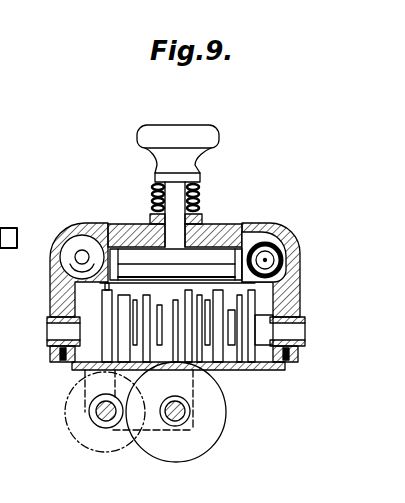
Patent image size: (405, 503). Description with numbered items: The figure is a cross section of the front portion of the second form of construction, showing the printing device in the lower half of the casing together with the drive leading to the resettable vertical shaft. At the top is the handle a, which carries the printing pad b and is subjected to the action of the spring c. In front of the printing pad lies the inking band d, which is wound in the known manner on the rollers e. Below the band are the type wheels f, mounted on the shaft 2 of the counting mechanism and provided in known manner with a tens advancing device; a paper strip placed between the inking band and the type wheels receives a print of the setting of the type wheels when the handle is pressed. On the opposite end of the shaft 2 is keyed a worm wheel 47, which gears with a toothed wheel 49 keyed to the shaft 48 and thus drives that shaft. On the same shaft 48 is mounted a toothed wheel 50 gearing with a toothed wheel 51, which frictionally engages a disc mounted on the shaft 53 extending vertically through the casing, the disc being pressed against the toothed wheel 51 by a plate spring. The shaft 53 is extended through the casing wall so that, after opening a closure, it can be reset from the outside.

The handle a is at (205, 142).
The printing pad b is at (180, 277).
The spring c is at (152, 187).
The inking band d is at (105, 268).
The rollers e is at (73, 247).
The type wheels f is at (248, 307).
The worm wheel 47 is at (166, 295).
The shaft 2 is at (52, 334).
The shaft 48 is at (100, 414).
The toothed wheel 49 is at (70, 395).
The toothed wheel 50 is at (100, 426).
The toothed wheel 51 is at (225, 399).
The shaft 53 is at (183, 413).